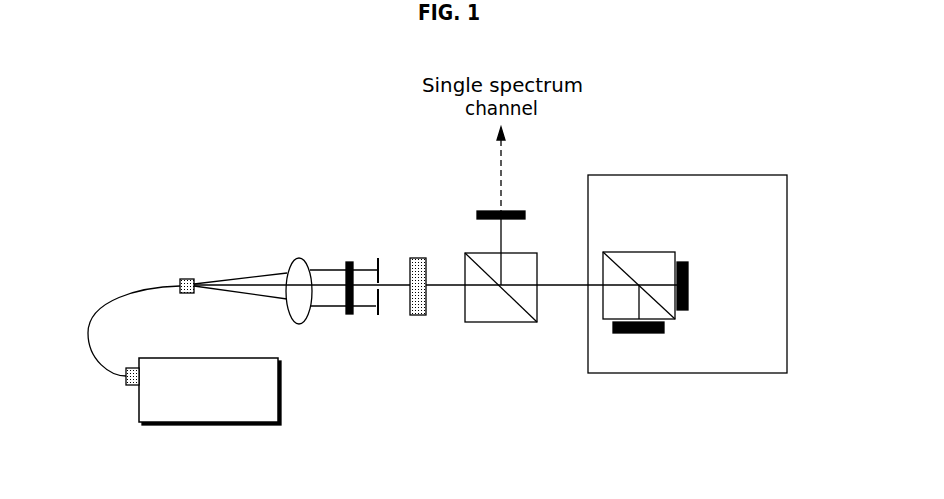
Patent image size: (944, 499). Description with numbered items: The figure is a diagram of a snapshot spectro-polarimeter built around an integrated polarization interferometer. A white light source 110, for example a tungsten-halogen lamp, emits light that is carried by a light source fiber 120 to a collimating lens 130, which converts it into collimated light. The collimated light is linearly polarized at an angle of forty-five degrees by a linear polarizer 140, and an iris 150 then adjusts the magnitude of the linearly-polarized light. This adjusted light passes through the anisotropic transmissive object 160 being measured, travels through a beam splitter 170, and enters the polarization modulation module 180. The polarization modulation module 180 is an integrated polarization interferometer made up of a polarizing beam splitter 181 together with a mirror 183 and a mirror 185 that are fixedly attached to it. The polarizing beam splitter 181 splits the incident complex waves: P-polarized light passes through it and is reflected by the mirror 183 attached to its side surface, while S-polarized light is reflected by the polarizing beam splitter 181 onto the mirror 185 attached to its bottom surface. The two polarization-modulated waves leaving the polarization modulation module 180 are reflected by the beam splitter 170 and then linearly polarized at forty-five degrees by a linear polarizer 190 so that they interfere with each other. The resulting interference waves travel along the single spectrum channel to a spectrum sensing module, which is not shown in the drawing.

The light source 110 is at (207, 422).
The light source fiber 120 is at (122, 296).
The collimating lens 130 is at (345, 345).
The linear polarizer 140 is at (350, 259).
The iris 150 is at (382, 259).
The anisotropic transmissive object 160 is at (418, 315).
The beam splitter 170 is at (508, 322).
The polarization modulation module 180 is at (818, 204).
The polarizing beam splitter 181 is at (638, 250).
The mirror 183 is at (689, 276).
The mirror 185 is at (639, 334).
The linear polarizer 190 is at (482, 210).